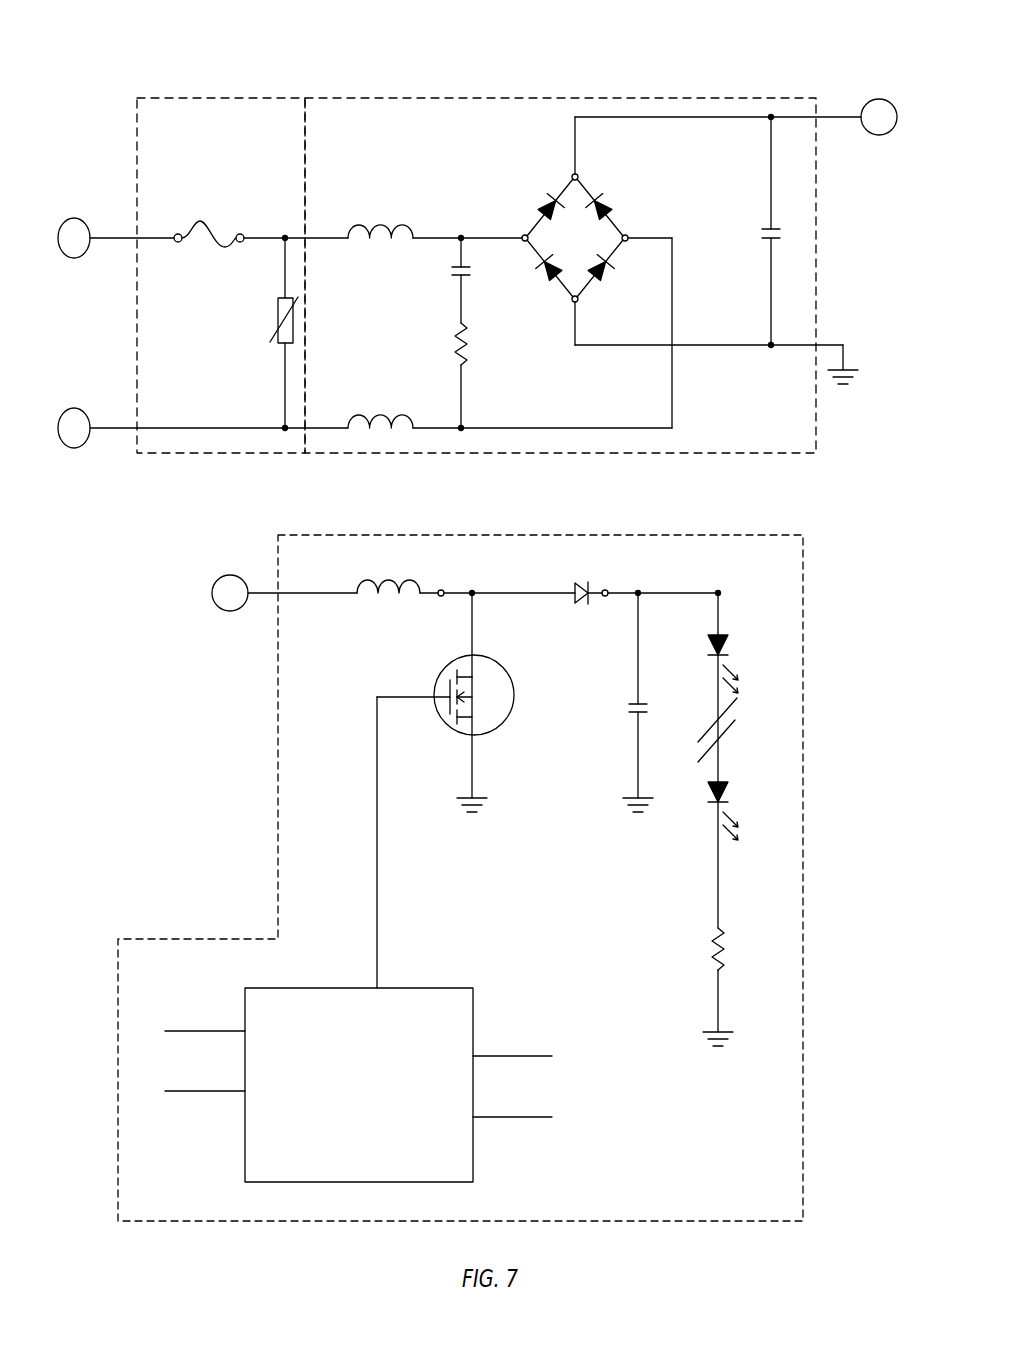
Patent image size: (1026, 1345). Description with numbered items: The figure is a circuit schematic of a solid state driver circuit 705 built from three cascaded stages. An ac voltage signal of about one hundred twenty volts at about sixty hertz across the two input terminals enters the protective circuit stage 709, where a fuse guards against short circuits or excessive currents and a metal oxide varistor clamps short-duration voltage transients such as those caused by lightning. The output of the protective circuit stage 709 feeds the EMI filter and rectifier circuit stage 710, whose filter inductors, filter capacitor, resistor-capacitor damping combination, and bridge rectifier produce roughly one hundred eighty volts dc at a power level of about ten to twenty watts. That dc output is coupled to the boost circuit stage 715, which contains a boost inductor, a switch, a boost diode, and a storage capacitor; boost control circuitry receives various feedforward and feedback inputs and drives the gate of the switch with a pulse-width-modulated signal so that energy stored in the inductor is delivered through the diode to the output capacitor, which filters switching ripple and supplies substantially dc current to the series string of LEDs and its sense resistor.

The driver circuit 705 is at (745, 27).
The protective circuit stage 709 is at (252, 98).
The EMI filter and rectifier circuit stage 710 is at (548, 98).
The boost circuit stage 715 is at (740, 535).